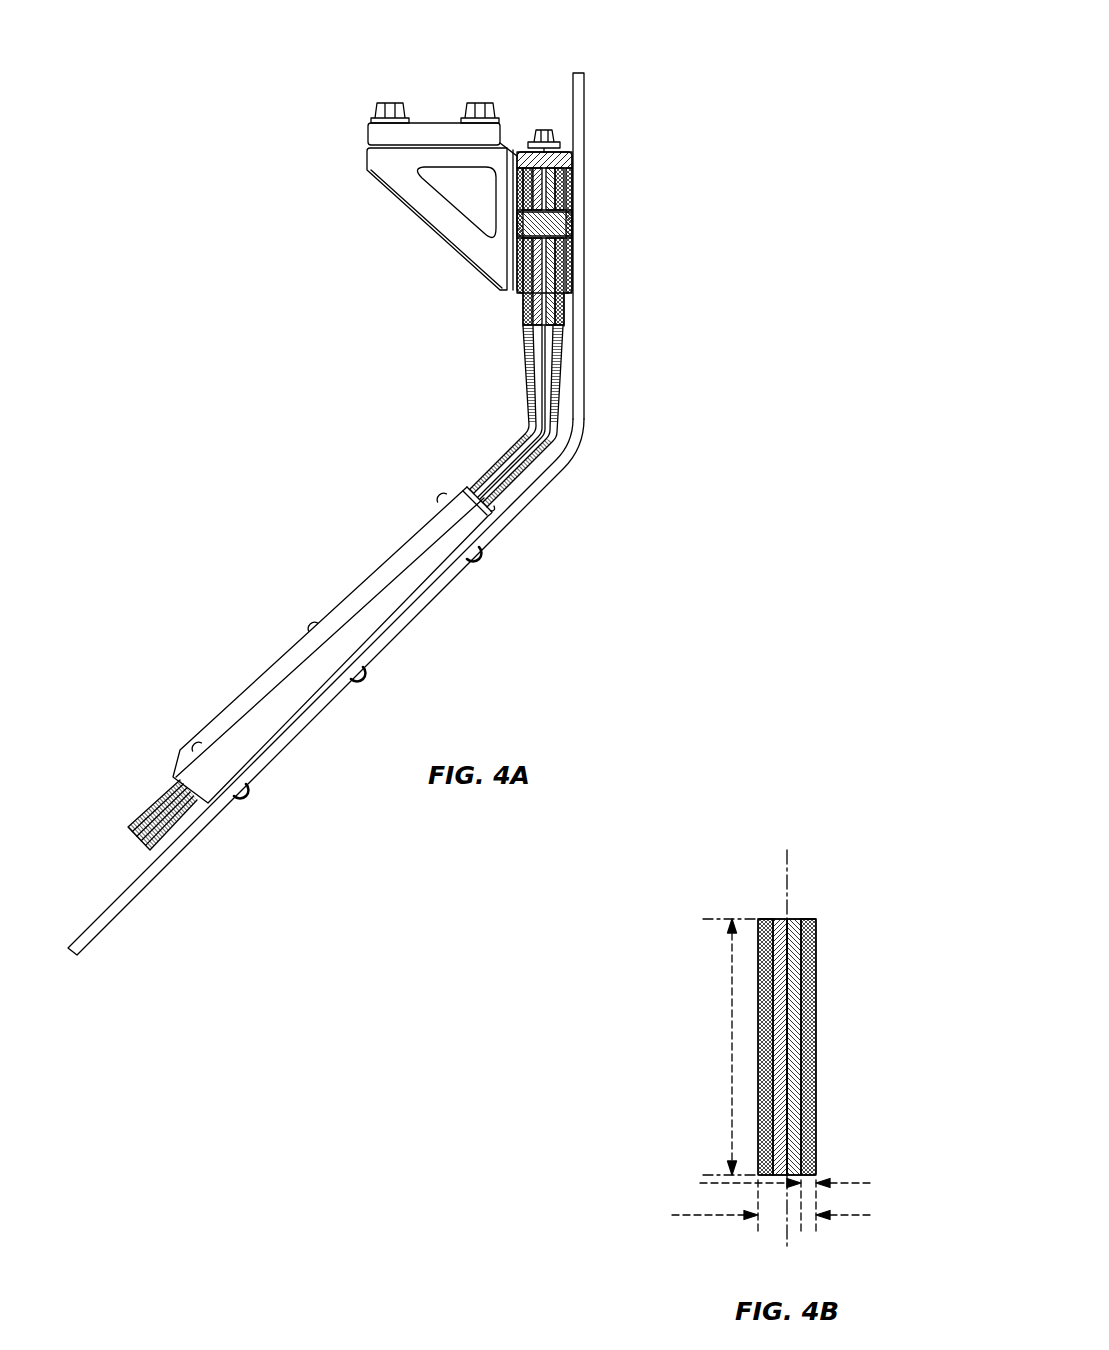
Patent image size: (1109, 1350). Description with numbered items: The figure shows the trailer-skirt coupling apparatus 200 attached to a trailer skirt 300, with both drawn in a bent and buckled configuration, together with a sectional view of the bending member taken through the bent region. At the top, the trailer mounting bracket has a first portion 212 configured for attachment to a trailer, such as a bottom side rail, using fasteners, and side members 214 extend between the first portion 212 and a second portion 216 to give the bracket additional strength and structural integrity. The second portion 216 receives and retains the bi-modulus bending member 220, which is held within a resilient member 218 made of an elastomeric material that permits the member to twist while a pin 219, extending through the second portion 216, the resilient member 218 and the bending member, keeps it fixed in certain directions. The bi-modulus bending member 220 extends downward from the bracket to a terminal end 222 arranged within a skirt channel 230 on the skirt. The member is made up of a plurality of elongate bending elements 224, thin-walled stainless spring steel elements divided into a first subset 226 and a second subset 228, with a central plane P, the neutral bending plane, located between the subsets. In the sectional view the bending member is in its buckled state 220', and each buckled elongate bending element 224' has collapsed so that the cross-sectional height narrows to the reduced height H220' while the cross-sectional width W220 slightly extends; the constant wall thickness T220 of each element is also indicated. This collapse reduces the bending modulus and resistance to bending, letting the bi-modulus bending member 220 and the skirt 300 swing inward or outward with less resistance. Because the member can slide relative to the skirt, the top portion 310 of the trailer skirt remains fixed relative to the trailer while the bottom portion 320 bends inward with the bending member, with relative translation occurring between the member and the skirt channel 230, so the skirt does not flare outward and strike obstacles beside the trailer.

In FIG. 4A, the trailer-skirt coupling apparatus 200 is at (330, 54).
In FIG. 4A, the first portion 212 is at (445, 150).
In FIG. 4A, the side members 214 is at (432, 230).
In FIG. 4A, the second portion 216 is at (572, 165).
In FIG. 4A, the resilient member 218 is at (566, 256).
In FIG. 4A, the pin 219 is at (572, 222).
In FIG. 4B, the bi-modulus bending member 220 is at (758, 1026).
In FIG. 4A, the bi-modulus bending member in buckled configuration 220' is at (481, 416).
In FIG. 4A, the terminal end 222 is at (130, 833).
In FIG. 4A, the elongate bending elements 224 is at (533, 416).
In FIG. 4B, the elongate bending elements in buckled configuration 224' is at (827, 1047).
In FIG. 4A, the first subset 226 is at (470, 484).
In FIG. 4B, the first subset 226 is at (778, 916).
In FIG. 4A, the second subset 228 is at (494, 513).
In FIG. 4B, the second subset 228 is at (796, 916).
In FIG. 4A, the skirt channel 230 is at (265, 673).
In FIG. 4A, the trailer skirt 300 is at (585, 113).
In FIG. 4A, the top portion of the trailer skirt 310 is at (580, 73).
In FIG. 4A, the bottom portion of the trailer skirt 320 is at (288, 743).
In FIG. 4B, the central plane P is at (788, 868).
In FIG. 4B, the width of bi-modulus bending member W220 is at (725, 1047).
In FIG. 4B, the elongate bending element thickness T220 is at (873, 1182).
In FIG. 4B, the narrowed height of bi-modulus bending member H220' is at (812, 1220).